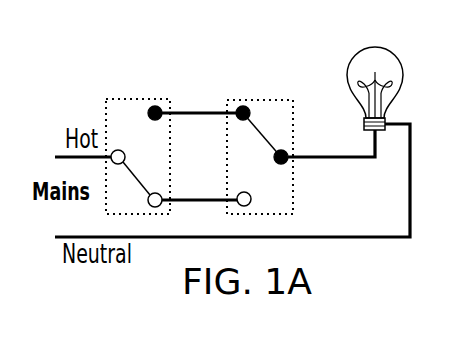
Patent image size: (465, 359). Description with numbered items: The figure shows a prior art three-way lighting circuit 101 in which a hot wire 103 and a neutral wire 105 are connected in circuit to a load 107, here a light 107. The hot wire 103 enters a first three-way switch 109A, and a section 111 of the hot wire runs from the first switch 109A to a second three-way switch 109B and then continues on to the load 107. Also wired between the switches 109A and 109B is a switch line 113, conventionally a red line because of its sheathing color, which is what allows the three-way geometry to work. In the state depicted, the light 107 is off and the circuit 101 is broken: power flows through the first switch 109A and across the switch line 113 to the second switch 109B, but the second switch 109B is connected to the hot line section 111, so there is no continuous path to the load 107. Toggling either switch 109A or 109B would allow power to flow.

The circuit 101 is at (330, 42).
The hot wire 103 is at (58, 153).
The neutral wire 105 is at (374, 239).
The load 107 is at (349, 83).
The first three-way switch 109A is at (105, 99).
The second three-way switch 109B is at (222, 98).
The section of the hot wire 111 is at (198, 110).
The switch line 113 is at (205, 193).